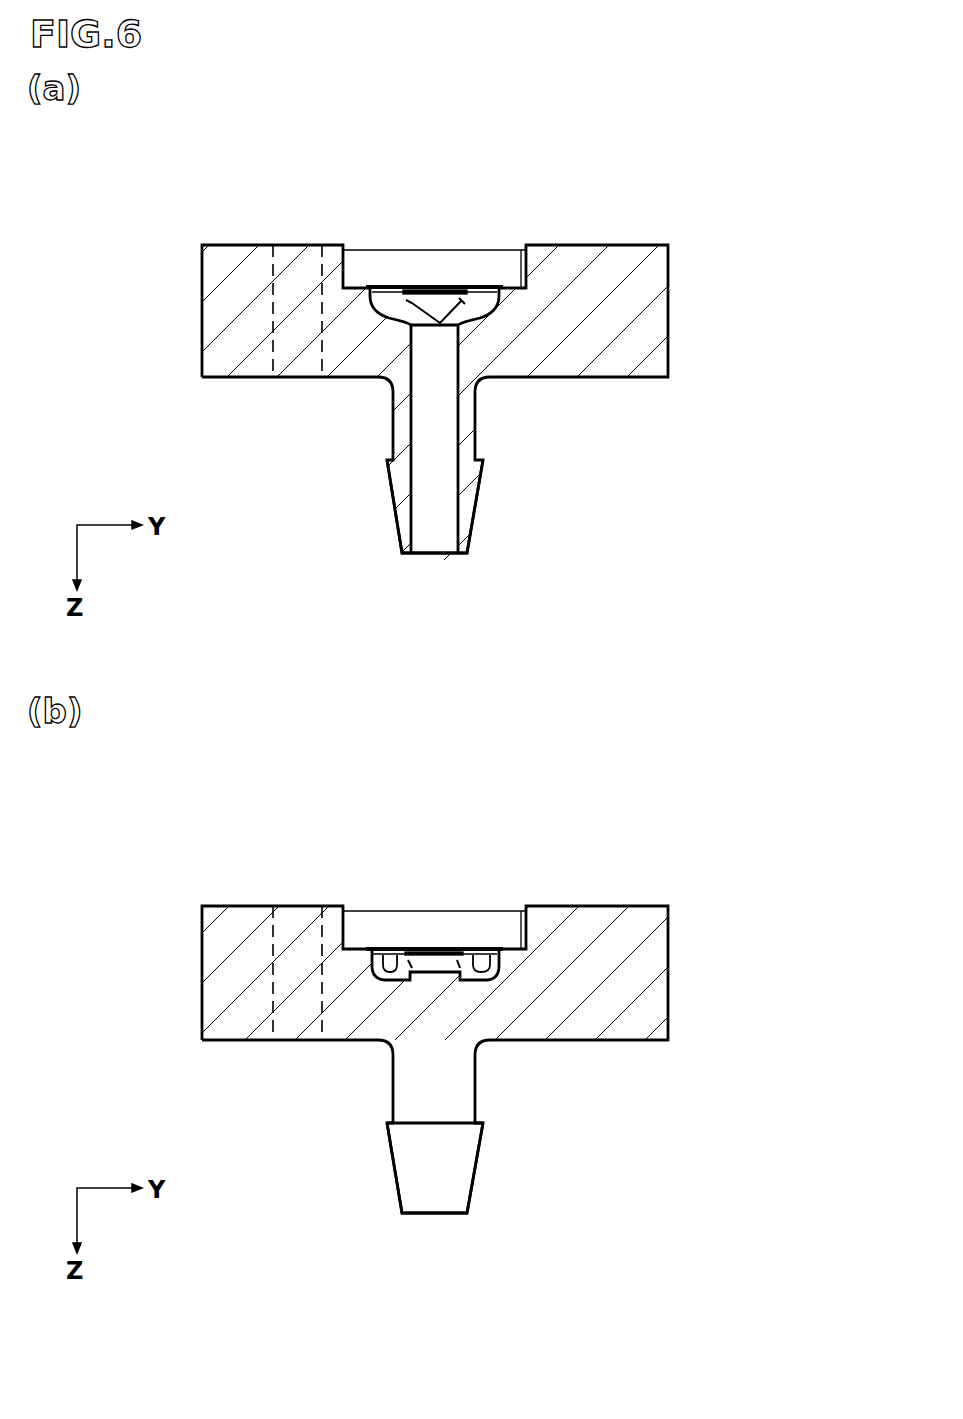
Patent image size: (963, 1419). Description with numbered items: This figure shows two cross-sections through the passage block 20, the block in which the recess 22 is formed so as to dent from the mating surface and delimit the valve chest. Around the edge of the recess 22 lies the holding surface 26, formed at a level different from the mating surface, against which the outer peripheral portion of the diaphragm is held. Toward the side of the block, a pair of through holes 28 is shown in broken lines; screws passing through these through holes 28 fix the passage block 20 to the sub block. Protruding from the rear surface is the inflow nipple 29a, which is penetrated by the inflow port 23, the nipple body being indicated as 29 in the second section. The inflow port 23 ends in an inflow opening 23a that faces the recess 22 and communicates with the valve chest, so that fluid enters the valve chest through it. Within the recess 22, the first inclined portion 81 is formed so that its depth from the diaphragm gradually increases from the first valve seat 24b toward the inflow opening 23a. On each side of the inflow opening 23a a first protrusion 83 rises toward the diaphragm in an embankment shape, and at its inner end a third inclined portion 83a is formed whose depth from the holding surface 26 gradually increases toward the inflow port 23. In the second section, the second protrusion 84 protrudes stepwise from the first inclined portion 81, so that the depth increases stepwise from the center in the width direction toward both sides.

The passage block 20 is at (679, 189).
The recess 22 is at (355, 262).
The first valve seat 24b is at (406, 300).
The holding surface 26 is at (519, 262).
The through holes 28 is at (297, 355).
The inflow port 23 is at (428, 510).
The inflow opening 23a is at (445, 328).
The stem 29 is at (440, 1178).
The inflow nipple 29a is at (404, 483).
The first inclined portion 81 is at (430, 314).
The first protrusion 83 is at (487, 307).
The third inclined portion 83a is at (462, 298).
The second protrusion 84 is at (413, 283).